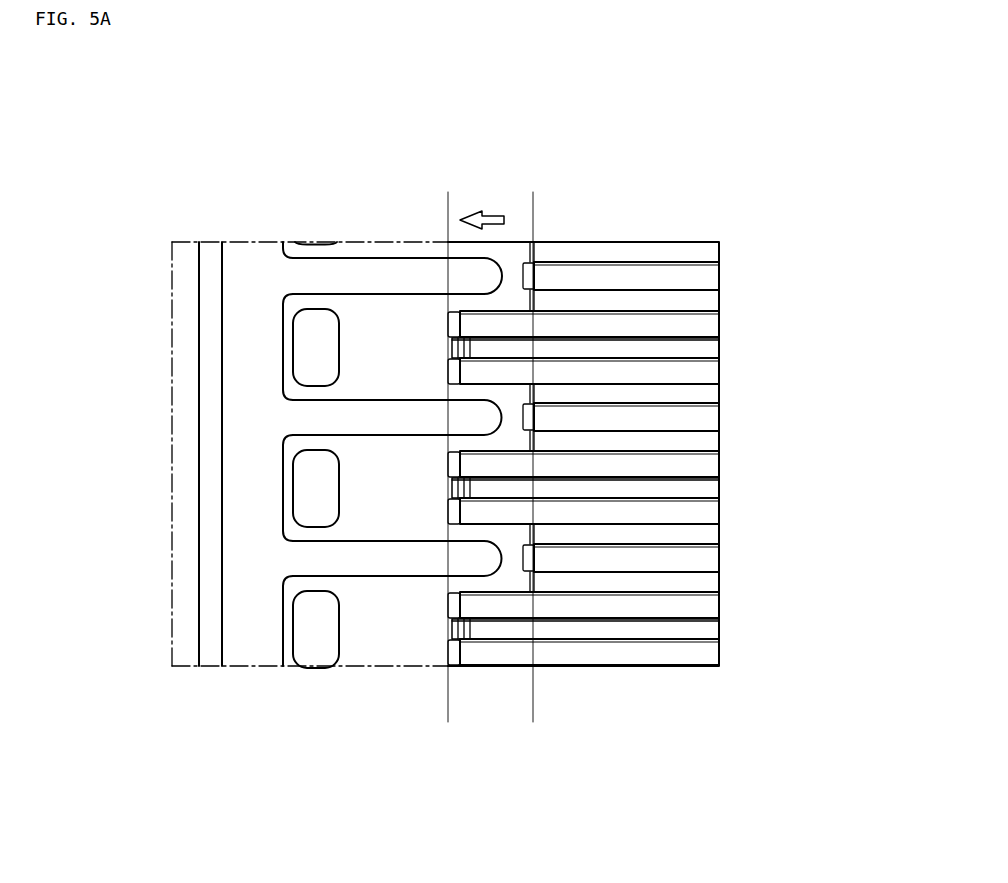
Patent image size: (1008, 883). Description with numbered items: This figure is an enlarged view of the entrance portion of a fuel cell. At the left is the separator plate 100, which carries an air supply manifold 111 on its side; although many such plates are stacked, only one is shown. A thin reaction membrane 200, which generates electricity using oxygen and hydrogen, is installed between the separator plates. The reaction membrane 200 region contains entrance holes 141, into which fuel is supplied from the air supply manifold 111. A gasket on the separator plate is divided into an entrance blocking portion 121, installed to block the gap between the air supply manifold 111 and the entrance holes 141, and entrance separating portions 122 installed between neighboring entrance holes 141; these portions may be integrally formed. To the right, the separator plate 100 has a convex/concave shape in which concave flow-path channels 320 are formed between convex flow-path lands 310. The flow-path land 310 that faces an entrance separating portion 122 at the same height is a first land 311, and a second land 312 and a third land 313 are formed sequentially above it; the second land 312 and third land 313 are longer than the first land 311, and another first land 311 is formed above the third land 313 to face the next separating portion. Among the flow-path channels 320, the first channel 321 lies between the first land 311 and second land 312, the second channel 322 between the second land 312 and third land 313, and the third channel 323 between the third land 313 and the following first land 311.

The separator plate 100 is at (208, 412).
The air supply manifold 111 is at (194, 631).
The entrance blocking portion 121 is at (262, 281).
The entrance separating portion 122 is at (412, 267).
The entrance holes 141 is at (318, 337).
The reaction membrane 200 is at (357, 368).
The flow-path land 310 is at (668, 454).
The first land 311 is at (704, 417).
The second land 312 is at (704, 372).
The third land 313 is at (704, 327).
The flow-path channel 320 is at (595, 382).
The first channel 321 is at (670, 397).
The second channel 322 is at (616, 354).
The third channel 323 is at (568, 304).